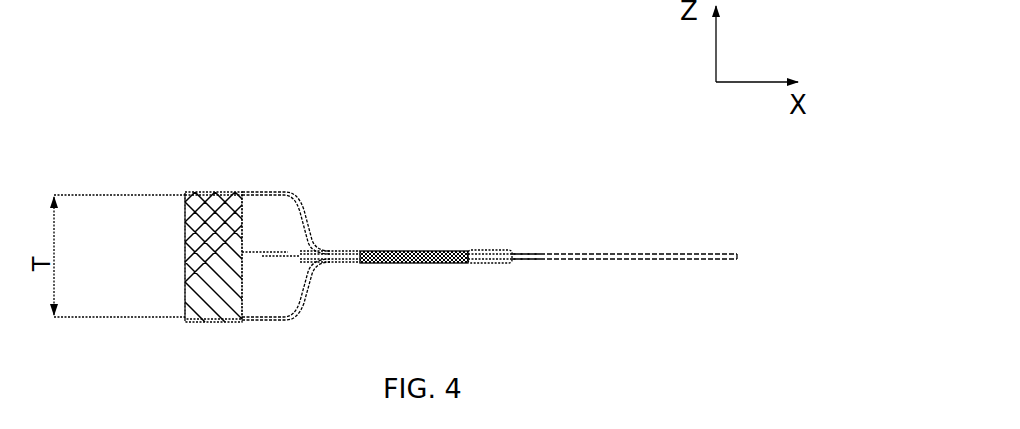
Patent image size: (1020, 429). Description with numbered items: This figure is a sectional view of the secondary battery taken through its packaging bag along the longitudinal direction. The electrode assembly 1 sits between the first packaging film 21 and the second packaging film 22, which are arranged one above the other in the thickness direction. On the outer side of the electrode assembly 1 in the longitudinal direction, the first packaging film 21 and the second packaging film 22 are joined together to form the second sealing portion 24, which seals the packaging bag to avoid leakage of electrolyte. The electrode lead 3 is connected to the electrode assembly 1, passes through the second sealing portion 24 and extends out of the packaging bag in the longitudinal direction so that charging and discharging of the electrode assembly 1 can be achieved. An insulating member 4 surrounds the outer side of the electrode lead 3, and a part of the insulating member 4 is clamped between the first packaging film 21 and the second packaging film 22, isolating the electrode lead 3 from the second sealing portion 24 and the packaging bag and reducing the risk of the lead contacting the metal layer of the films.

The electrode assembly 1 is at (190, 252).
The first packaging film 21 is at (245, 191).
The second packaging film 22 is at (268, 321).
The second sealing portion 24 is at (400, 250).
The insulating member 4 is at (517, 253).
The electrode lead 3 is at (700, 260).